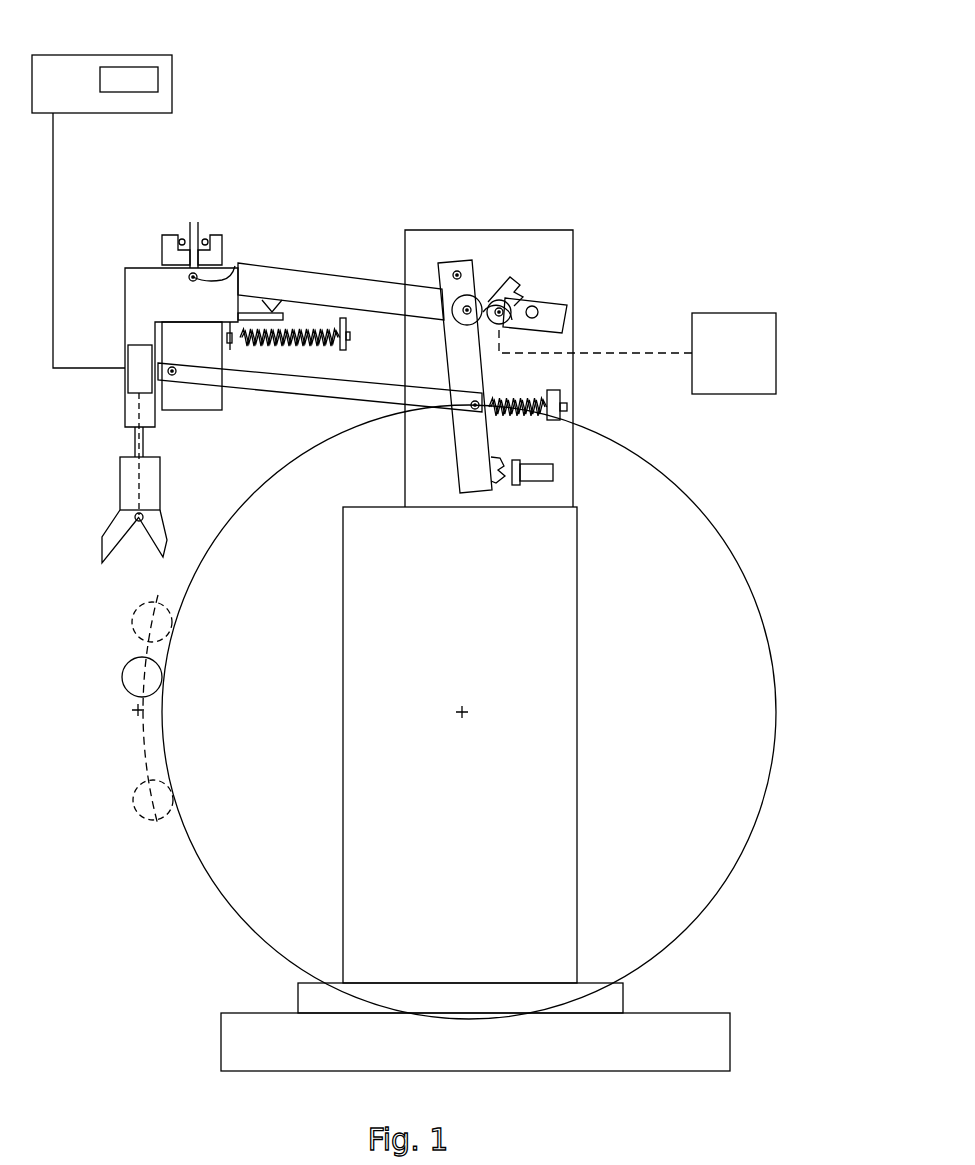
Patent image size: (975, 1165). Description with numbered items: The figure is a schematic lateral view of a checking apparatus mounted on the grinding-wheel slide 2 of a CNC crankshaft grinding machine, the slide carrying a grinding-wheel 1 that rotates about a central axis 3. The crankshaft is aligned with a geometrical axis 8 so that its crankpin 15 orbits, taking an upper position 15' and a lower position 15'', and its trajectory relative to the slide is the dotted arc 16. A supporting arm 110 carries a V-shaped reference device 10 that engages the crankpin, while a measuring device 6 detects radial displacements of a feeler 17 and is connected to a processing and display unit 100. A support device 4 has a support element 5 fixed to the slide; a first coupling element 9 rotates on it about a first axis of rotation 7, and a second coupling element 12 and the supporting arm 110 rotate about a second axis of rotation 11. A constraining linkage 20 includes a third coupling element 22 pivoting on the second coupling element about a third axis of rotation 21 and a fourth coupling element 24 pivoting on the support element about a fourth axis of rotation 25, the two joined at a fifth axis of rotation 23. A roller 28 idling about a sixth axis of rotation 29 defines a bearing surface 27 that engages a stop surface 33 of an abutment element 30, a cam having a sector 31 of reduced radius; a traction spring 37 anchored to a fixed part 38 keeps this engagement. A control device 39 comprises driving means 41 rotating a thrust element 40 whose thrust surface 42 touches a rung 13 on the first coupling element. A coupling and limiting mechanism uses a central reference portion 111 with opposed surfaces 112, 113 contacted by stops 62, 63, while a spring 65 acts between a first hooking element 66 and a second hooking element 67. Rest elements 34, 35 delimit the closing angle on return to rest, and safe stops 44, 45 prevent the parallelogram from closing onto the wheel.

The grinding-wheel 1 is at (645, 928).
The grinding-wheel slide 2 is at (385, 888).
The central axis of rotation 3 is at (464, 714).
The support device 4 is at (306, 146).
The support element 5 is at (552, 245).
The measuring device 6 is at (130, 378).
The first axis of rotation 7 is at (506, 290).
The geometrical axis of rotation 8 is at (137, 712).
The first coupling element 9 is at (353, 292).
The reference device 10 is at (128, 486).
The second axis of rotation 11 is at (227, 268).
The second coupling element 12 is at (205, 400).
The rung 13 is at (538, 310).
The crankpin 15 is at (95, 680).
The upper position 15' is at (96, 622).
The lower position 15'' is at (126, 832).
The arc 16 is at (142, 762).
The feeler 17 is at (139, 523).
The constraining linkage 20 is at (321, 405).
The third axis of rotation 21 is at (172, 376).
The third coupling element 22 is at (245, 380).
The fifth axis of rotation 23 is at (483, 413).
The fourth coupling element 24 is at (447, 272).
The fourth axis of rotation 25 is at (457, 271).
The bearing surface 27 is at (478, 296).
The roller 28 is at (470, 289).
The sixth axis of rotation 29 is at (447, 305).
The abutment element 30 is at (548, 338).
The sector with reduced radius 31 is at (499, 299).
The stop surface 33 is at (519, 318).
The rest element 34 is at (272, 300).
The rest element 35 is at (250, 313).
The traction spring 37 is at (512, 395).
The fixed part 38 is at (563, 404).
The control device 39 is at (627, 165).
The thrust element 40 is at (531, 289).
The driving means 41 is at (740, 325).
The thrust surface 42 is at (540, 298).
The safe stop 44 is at (520, 482).
The safe stop 45 is at (496, 478).
The stop 62 is at (208, 229).
The stop 63 is at (180, 231).
The spring 65 is at (300, 330).
The first hooking element 66 is at (347, 318).
The second hooking element 67 is at (235, 348).
The processing and display unit 100 is at (77, 65).
The supporting arm 110 is at (138, 280).
The central reference portion 111 is at (192, 229).
The opposed surface 112 is at (203, 229).
The opposed surface 113 is at (182, 229).